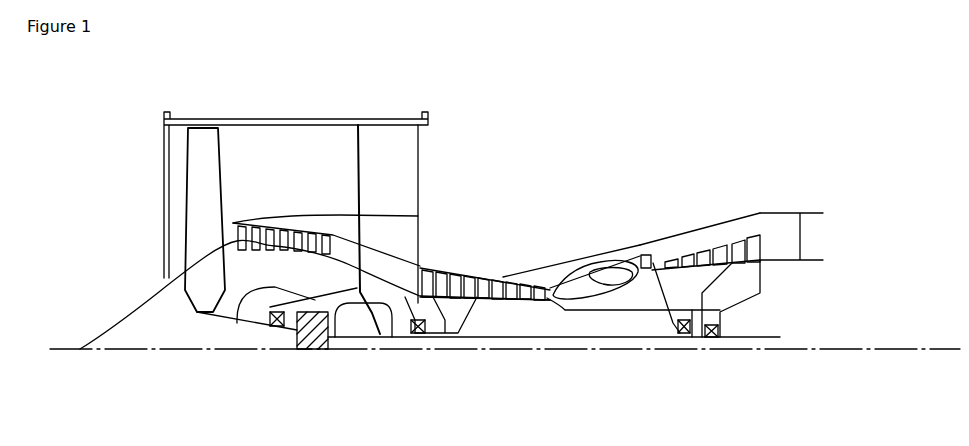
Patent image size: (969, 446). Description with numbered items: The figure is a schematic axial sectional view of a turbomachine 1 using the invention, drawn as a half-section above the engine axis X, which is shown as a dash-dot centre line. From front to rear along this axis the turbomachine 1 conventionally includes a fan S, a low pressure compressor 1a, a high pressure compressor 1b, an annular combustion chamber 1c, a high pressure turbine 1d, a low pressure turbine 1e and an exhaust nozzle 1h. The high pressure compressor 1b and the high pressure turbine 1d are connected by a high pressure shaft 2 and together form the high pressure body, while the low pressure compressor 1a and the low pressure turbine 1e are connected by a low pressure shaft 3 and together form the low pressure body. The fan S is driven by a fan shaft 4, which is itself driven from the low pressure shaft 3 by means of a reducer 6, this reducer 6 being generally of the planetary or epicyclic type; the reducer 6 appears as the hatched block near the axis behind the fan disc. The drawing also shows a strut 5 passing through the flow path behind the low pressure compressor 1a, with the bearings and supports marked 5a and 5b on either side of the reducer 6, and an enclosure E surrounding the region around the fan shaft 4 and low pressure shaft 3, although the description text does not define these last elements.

The turbomachine 1 is at (530, 186).
The low pressure compressor 1a is at (258, 222).
The high pressure compressor 1b is at (450, 268).
The annular combustion chamber 1c is at (600, 278).
The high pressure turbine 1d is at (647, 256).
The low pressure turbine 1e is at (758, 216).
The exhaust nozzle 1h is at (810, 232).
The high pressure shaft 2 is at (595, 312).
The low pressure shaft 3 is at (508, 342).
The fan shaft 4 is at (262, 328).
The structural strut 5 is at (345, 280).
The front rotor drum 5a is at (240, 326).
The bearing support 5b is at (387, 332).
The reducer 6 is at (307, 335).
The enclosure E is at (343, 308).
The fan S is at (200, 178).
The engine axis X is at (58, 350).